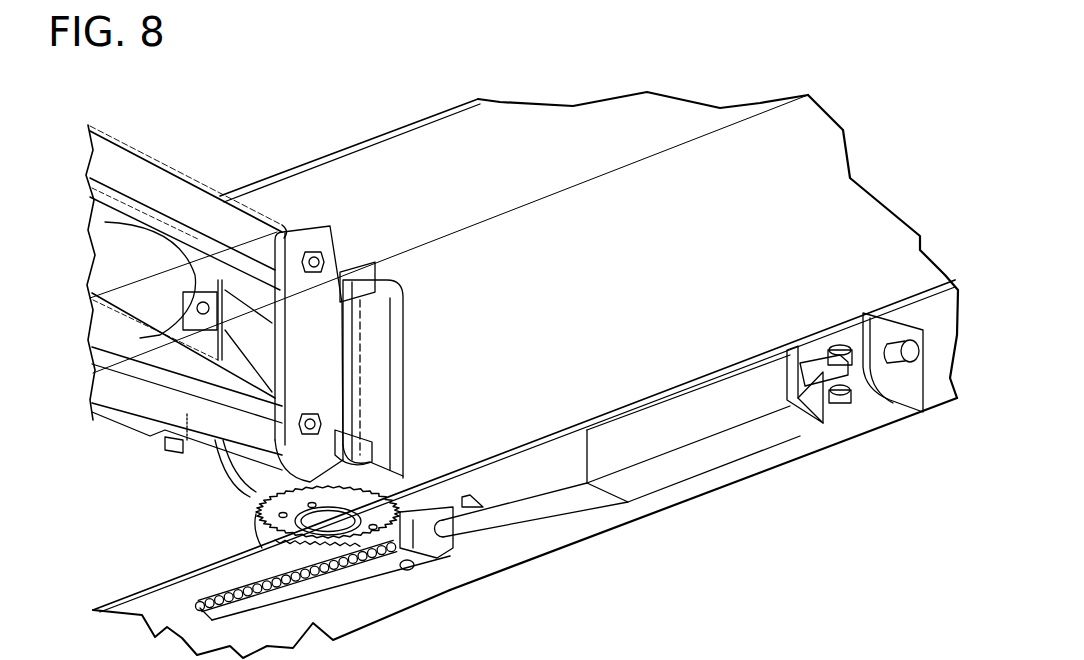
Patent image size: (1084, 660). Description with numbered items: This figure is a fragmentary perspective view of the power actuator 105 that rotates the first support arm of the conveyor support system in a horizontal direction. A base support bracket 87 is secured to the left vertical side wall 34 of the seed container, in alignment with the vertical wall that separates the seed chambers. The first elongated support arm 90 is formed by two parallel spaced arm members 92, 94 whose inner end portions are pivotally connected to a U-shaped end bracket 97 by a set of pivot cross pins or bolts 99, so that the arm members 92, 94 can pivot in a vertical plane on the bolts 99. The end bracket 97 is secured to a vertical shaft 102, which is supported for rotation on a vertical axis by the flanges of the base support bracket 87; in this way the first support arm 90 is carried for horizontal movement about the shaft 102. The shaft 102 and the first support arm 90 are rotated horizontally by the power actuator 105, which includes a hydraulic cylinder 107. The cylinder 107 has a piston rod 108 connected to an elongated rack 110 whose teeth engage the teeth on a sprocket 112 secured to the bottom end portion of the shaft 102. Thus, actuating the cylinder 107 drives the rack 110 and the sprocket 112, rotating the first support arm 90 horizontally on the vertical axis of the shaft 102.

The left vertical side wall 34 is at (578, 270).
The base support bracket 87 is at (375, 353).
The first elongated support arm 90 is at (164, 158).
The arm member 92 is at (180, 190).
The arm member 94 is at (190, 372).
The U-shaped end bracket 97 is at (328, 318).
The pivot cross pins or bolts 99 is at (313, 272).
The vertical shaft 102 is at (347, 372).
The power actuator 105 is at (677, 413).
The hydraulic cylinder 107 is at (763, 388).
The piston rod 108 is at (510, 503).
The elongated rack 110 is at (293, 590).
The sprocket 112 is at (273, 523).